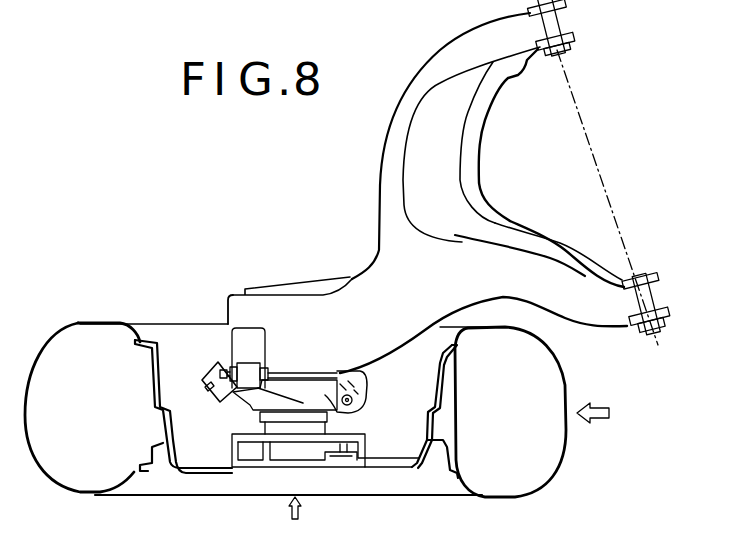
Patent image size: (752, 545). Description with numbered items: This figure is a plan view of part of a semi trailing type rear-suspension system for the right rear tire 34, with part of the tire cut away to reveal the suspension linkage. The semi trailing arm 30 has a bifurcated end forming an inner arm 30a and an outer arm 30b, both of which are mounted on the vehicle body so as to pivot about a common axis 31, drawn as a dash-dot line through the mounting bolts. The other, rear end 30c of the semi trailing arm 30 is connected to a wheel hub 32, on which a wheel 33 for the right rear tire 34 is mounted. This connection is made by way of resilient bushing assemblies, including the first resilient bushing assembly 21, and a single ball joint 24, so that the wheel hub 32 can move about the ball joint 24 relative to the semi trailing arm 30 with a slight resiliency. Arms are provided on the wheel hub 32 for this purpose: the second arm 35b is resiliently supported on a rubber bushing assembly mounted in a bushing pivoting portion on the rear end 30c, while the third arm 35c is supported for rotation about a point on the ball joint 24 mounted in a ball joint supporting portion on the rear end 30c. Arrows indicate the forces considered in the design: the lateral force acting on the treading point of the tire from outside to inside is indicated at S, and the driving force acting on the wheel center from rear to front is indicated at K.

The semi trailing arm 30 is at (388, 148).
The inner arm 30a is at (483, 57).
The outer arm 30b is at (517, 273).
The rear end of the semi trailing arm 30c is at (277, 313).
The common axis 31 is at (597, 164).
The ball joint 24 is at (246, 372).
The third arm 35c is at (292, 386).
The second arm 35b is at (237, 402).
The first resilient bushing assembly 21 is at (358, 400).
The wheel hub 32 is at (334, 422).
The wheel 33 is at (398, 444).
The right rear tire 34 is at (465, 500).
The lateral force S is at (287, 512).
The driving force K is at (604, 414).